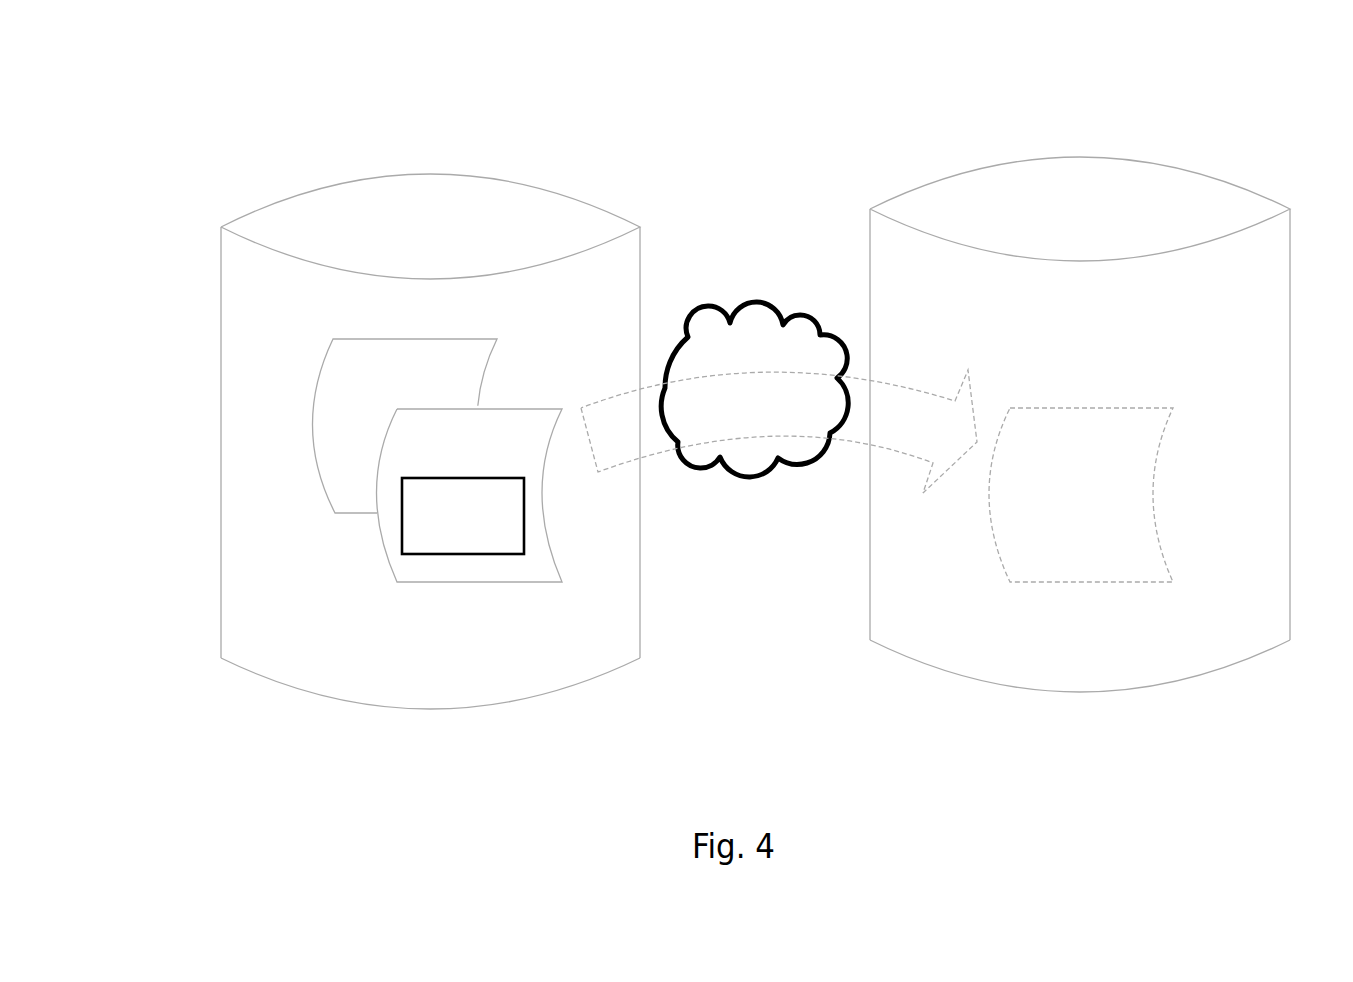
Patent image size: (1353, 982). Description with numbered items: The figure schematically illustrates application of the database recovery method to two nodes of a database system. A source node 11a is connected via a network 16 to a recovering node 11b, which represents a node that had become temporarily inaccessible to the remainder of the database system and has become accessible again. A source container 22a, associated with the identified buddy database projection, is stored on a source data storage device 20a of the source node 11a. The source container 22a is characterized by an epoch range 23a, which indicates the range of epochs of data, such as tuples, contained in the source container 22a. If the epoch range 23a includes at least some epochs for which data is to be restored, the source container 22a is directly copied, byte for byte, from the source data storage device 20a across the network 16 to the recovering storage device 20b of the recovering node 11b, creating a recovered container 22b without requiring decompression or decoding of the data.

The source node 11a is at (210, 137).
The recovering node 11b is at (1236, 124).
The source data storage device 20a is at (430, 172).
The recovering storage device 20b is at (1077, 156).
The source container 22a is at (468, 582).
The recovered container 22b is at (1153, 495).
The epoch range 23a is at (525, 532).
The network 16 is at (753, 298).